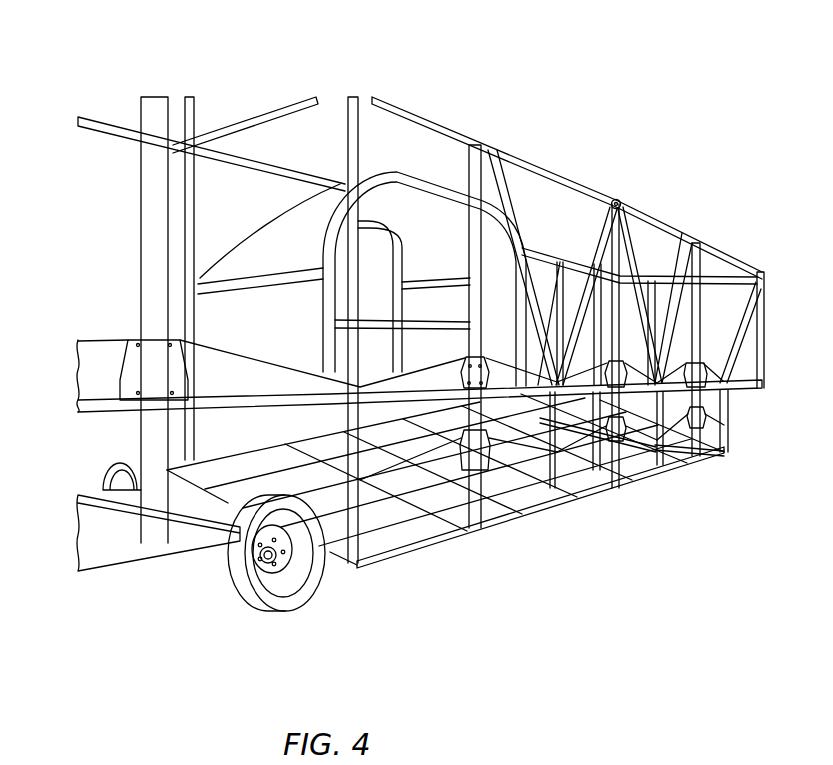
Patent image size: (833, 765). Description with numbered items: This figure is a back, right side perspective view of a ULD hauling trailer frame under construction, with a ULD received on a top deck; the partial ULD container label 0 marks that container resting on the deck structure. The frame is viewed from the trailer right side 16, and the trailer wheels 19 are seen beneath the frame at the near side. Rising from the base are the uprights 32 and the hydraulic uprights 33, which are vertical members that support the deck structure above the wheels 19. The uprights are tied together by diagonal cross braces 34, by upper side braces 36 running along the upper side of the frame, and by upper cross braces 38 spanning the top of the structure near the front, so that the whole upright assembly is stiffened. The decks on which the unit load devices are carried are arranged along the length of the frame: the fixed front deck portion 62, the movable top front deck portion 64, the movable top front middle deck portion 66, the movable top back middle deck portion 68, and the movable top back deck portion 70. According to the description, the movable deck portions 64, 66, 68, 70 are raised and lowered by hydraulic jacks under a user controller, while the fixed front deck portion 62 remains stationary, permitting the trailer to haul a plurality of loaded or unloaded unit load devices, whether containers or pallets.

The upper cross braces 38 is at (270, 112).
The vehicle frame 0 is at (272, 230).
The uprights 32 is at (357, 125).
The hydraulic uprights 33 is at (157, 175).
The cross braces 34 is at (500, 170).
The upper side braces 36 is at (676, 230).
The fixed front deck portion 62 is at (765, 383).
The movable top front deck portion 64 is at (700, 420).
The movable top front middle deck portion 66 is at (660, 468).
The movable top back middle deck portion 68 is at (492, 512).
The movable top back deck portion 70 is at (93, 407).
The trailer right side 16 is at (342, 512).
The wheels 19 is at (253, 593).